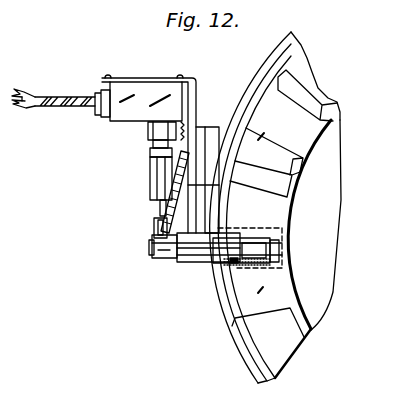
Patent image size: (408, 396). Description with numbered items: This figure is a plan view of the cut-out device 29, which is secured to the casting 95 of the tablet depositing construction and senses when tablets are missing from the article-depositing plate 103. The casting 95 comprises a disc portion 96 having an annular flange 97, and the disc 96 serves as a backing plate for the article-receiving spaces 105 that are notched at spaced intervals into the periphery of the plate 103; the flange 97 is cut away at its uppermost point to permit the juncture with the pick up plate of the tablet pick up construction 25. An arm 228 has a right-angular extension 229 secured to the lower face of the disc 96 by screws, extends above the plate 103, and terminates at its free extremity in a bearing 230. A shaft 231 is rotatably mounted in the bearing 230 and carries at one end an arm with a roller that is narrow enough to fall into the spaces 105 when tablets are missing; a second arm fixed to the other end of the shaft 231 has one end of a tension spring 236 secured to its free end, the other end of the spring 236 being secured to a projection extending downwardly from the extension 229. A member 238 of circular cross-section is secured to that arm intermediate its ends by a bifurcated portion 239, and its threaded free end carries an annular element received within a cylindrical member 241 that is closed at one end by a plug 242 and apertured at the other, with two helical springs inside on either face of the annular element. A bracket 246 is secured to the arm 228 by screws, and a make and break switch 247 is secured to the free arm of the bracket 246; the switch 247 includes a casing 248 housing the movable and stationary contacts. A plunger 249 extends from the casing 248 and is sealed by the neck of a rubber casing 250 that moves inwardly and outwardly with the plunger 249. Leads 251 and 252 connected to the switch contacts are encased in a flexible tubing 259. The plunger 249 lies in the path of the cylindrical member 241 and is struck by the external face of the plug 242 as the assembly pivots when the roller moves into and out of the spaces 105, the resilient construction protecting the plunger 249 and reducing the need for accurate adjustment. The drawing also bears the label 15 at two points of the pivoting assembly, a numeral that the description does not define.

The tablet pick up construction 25 is at (329, 51).
The cut-out device 29 is at (199, 76).
The casting 95 is at (10, 3).
The disc portion 96 is at (276, 357).
The annular flange 97 is at (247, 365).
The article-depositing plate 103 is at (241, 302).
The article-receiving spaces 105 is at (314, 93).
The bracket 246 is at (146, 73).
The make and break switch 247 is at (109, 131).
The casing 248 is at (132, 115).
The plunger 249 is at (148, 163).
The rubber casing 250 is at (152, 144).
The lead 251 is at (27, 110).
The lead 252 is at (23, 90).
The flexible tubing 259 is at (57, 106).
The shaft 15 is at (157, 130).
The plug 242 is at (147, 158).
The cylindrical member 241 is at (176, 188).
The member 238 is at (152, 217).
The bifurcated portion 239 is at (153, 229).
The shaft 231 is at (152, 249).
The bearing 230 is at (193, 262).
The right-angular extension 229 is at (212, 127).
The arm 228 is at (224, 216).
The tension spring 236 is at (232, 176).